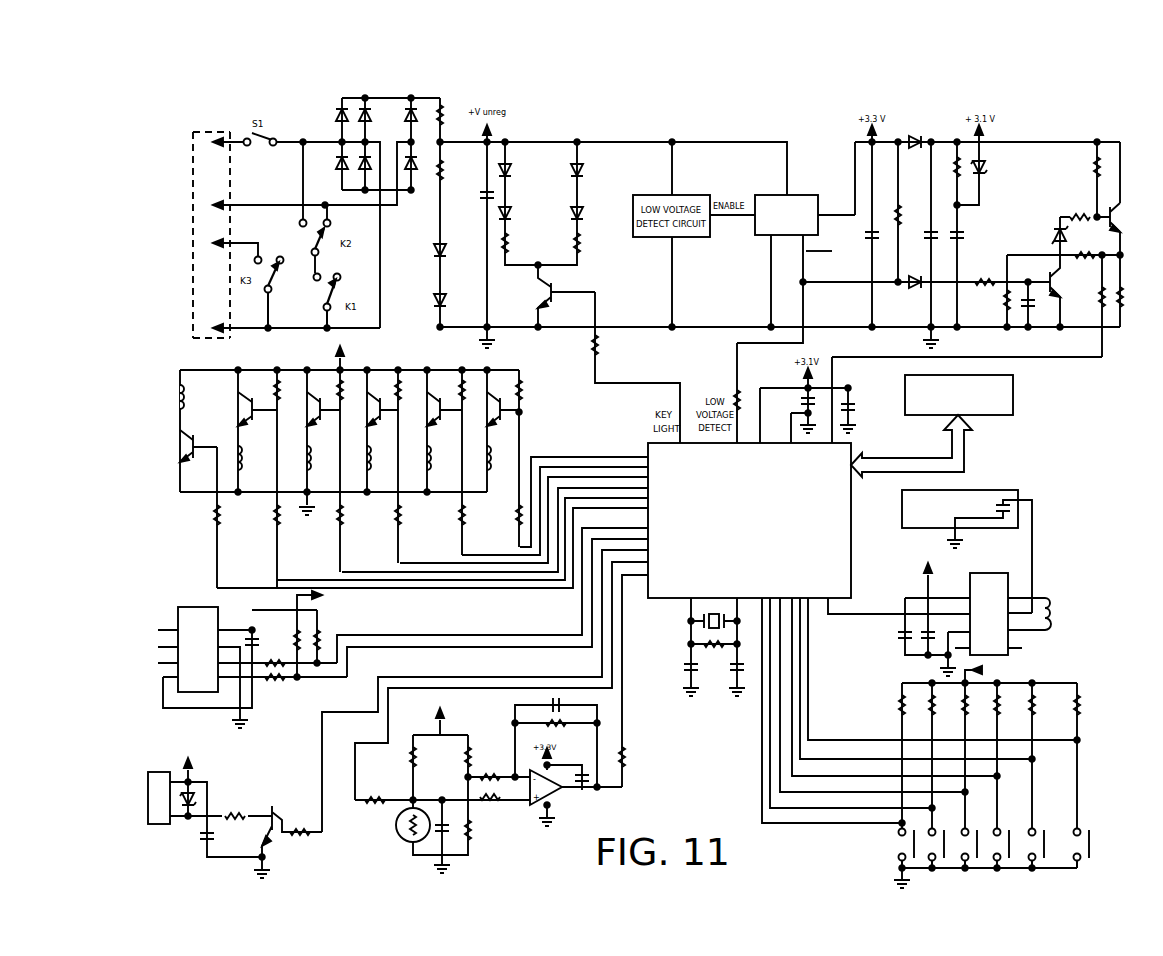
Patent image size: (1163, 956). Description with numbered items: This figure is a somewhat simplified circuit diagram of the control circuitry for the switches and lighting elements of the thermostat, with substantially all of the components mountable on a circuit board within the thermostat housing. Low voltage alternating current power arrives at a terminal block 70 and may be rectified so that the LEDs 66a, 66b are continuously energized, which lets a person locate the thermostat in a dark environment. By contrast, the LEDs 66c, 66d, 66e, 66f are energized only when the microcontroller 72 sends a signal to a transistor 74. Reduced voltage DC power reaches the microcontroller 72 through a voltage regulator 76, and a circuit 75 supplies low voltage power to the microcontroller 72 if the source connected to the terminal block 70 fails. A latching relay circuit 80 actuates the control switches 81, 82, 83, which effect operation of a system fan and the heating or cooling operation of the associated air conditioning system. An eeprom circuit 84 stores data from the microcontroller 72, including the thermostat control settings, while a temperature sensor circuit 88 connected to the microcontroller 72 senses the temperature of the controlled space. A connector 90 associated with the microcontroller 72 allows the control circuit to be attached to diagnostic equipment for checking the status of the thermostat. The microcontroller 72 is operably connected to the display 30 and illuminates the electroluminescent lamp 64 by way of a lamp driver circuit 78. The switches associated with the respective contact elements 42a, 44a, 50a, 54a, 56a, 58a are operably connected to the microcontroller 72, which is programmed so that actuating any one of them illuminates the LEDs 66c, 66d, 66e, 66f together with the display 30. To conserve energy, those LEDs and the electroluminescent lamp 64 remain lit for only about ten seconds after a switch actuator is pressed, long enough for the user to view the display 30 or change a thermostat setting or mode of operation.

The terminal block 70 is at (193, 282).
The control switch 81 is at (282, 282).
The control switch 82 is at (339, 287).
The control switch 83 is at (302, 244).
The LED 66a is at (433, 258).
The LED 66b is at (435, 308).
The LED 66c is at (583, 226).
The LED 66d is at (585, 165).
The LED 66e is at (500, 215).
The LED 66f is at (510, 165).
The transistor 74 is at (536, 293).
The circuit 75 is at (1118, 218).
The voltage regulator 76 is at (800, 195).
The latching relay circuit 80 is at (545, 426).
The microcontroller 72 is at (875, 537).
The display 30 is at (1013, 405).
The electroluminescent lamp 64 is at (1000, 490).
The lamp driver circuit 78 is at (986, 573).
The eeprom circuit 84 is at (184, 607).
The temperature sensor circuit 88 is at (395, 826).
The connector 90 is at (145, 773).
The contact element 50a is at (1094, 842).
The contact element 54a is at (910, 871).
The contact element 56a is at (946, 869).
The contact element 58a is at (968, 869).
The contact element 42a is at (1030, 869).
The contact element 44a is at (1080, 868).